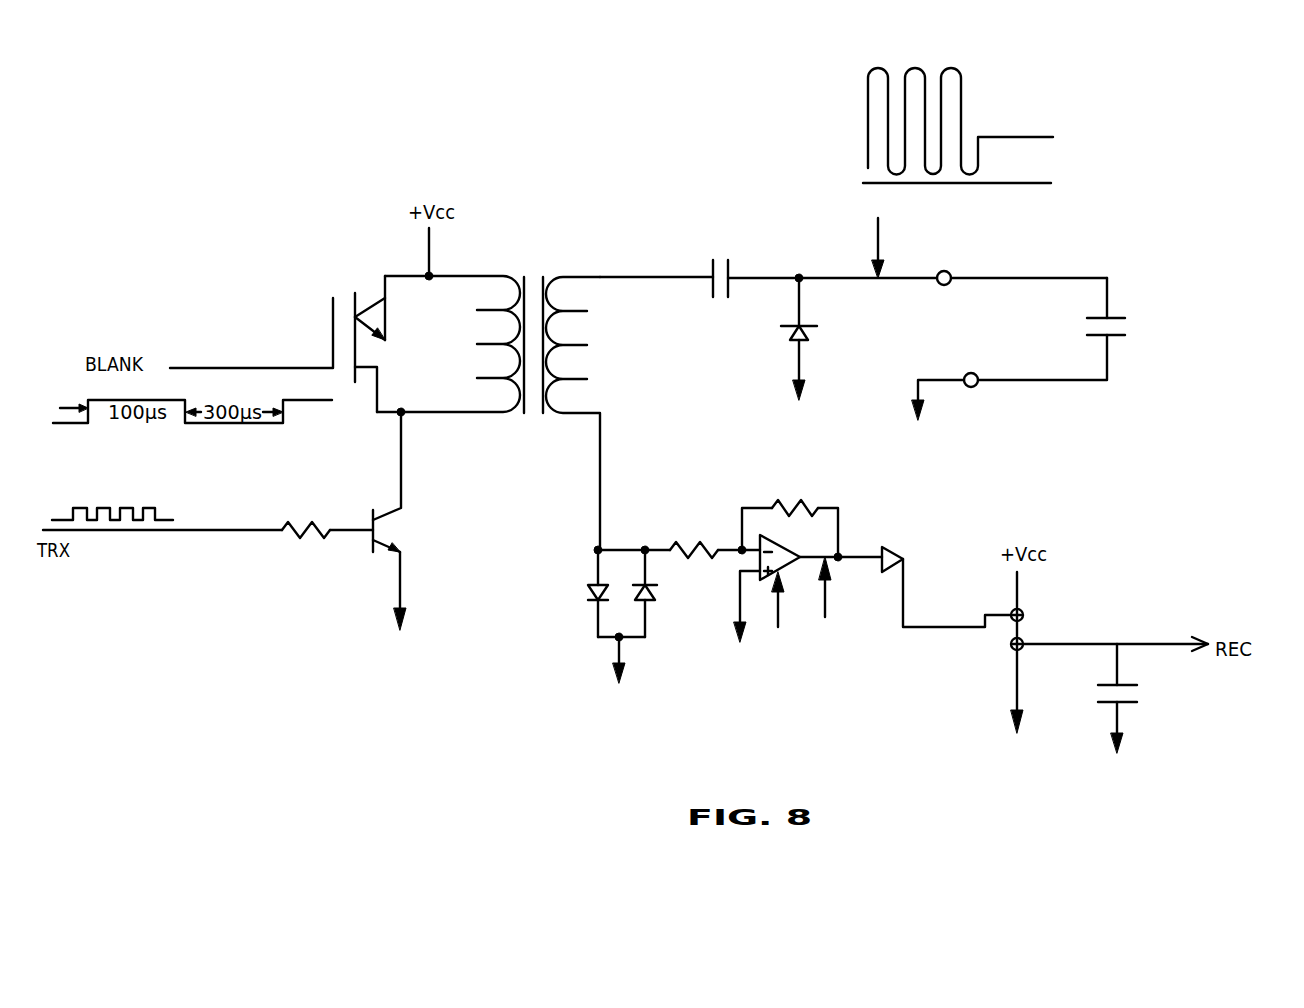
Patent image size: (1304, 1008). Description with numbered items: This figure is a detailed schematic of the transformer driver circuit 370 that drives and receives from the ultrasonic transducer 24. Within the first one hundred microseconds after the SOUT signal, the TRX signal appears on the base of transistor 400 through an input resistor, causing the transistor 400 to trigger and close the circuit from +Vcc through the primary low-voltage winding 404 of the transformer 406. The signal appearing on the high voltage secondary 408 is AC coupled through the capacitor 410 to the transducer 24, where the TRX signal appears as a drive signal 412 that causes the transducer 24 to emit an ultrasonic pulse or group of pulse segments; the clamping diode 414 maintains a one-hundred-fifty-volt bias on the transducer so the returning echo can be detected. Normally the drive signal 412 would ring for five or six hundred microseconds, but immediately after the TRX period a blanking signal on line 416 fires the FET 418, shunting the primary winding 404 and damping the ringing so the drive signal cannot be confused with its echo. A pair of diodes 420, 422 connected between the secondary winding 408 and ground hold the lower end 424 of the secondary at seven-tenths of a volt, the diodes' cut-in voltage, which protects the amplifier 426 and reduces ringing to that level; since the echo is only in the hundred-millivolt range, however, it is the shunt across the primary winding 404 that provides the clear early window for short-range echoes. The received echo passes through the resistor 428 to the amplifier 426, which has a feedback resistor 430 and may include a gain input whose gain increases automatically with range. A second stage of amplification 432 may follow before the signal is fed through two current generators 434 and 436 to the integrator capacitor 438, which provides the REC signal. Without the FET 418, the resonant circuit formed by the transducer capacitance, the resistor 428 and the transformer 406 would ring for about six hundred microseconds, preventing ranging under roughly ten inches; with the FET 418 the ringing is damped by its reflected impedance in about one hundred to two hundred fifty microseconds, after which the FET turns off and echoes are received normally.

The transmit/receive circuit 370 is at (433, 125).
The transistor 400 is at (392, 535).
The primary low-voltage winding 404 is at (448, 267).
The transformer 406 is at (562, 243).
The high voltage secondary 408 is at (597, 270).
The capacitor 410 is at (768, 250).
The drive signal 412 is at (968, 87).
The clamping diode 414 is at (815, 338).
The ultrasonic transducer 24 is at (1122, 307).
The line 416 is at (192, 367).
The FET 418 is at (368, 298).
The diode 420 is at (585, 597).
The diode 422 is at (658, 592).
The lower end of secondary winding 424 is at (592, 548).
The amplifier 426 is at (793, 543).
The resistor 428 is at (690, 540).
The feedback resistor 430 is at (800, 505).
The second stage of amplification 432 is at (903, 552).
The current generator 434 is at (1028, 620).
The current generator 436 is at (1008, 652).
The integrator capacitor 438 is at (1140, 690).